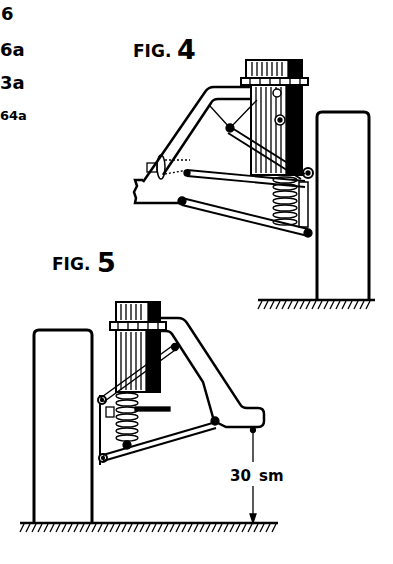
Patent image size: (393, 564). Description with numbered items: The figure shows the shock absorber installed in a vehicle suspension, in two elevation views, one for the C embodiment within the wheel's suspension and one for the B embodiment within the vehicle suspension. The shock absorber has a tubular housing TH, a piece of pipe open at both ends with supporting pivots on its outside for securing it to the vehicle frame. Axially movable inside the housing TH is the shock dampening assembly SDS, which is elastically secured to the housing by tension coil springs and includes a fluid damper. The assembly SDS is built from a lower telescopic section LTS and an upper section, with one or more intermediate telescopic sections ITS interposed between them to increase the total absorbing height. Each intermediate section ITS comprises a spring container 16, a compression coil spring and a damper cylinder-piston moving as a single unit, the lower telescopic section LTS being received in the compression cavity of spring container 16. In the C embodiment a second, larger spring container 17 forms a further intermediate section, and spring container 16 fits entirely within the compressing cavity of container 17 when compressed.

In FIG. 4, the spring container 16 is at (300, 150).
In FIG. 5, the spring container 16 is at (118, 366).
In FIG. 4, the second spring container 17 is at (303, 113).
In FIG. 4, the tubular housing TH is at (290, 60).
In FIG. 5, the tubular housing TH is at (140, 306).
In FIG. 4, the shock dampening assembly SDS is at (262, 198).
In FIG. 5, the shock dampening assembly SDS is at (133, 397).
In FIG. 4, the lower telescopic section LTS is at (270, 205).
In FIG. 5, the lower telescopic section LTS is at (142, 425).
In FIG. 5, the intermediate telescopic section ITS is at (112, 370).